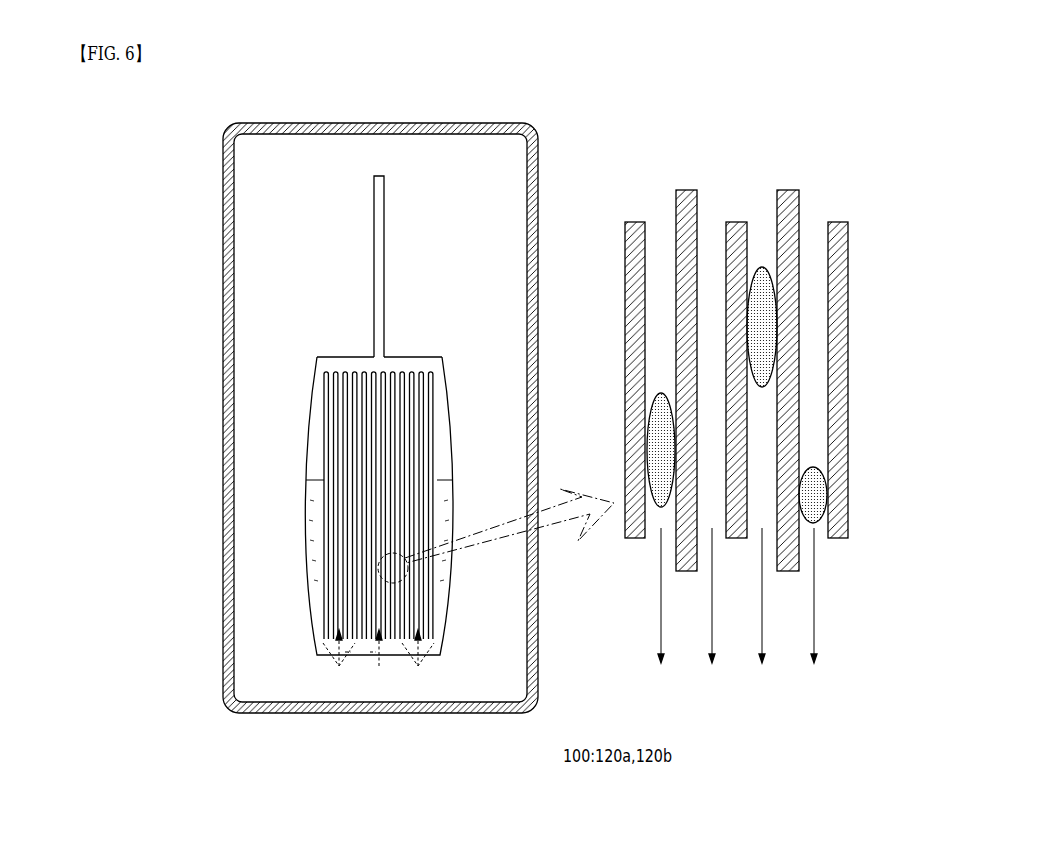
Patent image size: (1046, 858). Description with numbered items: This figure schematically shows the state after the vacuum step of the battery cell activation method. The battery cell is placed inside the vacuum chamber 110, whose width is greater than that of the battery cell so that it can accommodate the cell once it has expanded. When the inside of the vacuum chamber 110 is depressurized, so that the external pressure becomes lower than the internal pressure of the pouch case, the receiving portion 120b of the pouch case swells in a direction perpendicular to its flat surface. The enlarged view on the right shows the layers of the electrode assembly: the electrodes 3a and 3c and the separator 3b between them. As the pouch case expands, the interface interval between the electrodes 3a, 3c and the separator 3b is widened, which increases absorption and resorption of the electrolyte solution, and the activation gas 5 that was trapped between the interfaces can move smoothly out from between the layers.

The vacuum chamber 110 is at (223, 191).
The receiving portion 120b is at (307, 450).
The electrode 3a is at (636, 222).
The separator 3b is at (688, 190).
The electrode 3c is at (737, 222).
The activation gas 5 is at (655, 522).